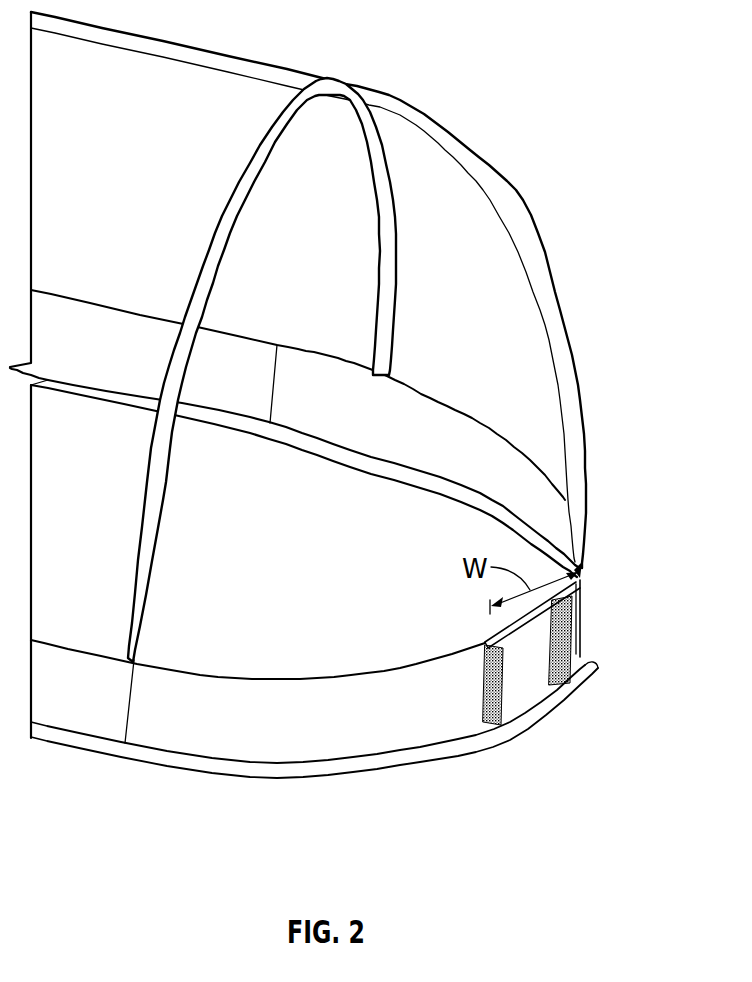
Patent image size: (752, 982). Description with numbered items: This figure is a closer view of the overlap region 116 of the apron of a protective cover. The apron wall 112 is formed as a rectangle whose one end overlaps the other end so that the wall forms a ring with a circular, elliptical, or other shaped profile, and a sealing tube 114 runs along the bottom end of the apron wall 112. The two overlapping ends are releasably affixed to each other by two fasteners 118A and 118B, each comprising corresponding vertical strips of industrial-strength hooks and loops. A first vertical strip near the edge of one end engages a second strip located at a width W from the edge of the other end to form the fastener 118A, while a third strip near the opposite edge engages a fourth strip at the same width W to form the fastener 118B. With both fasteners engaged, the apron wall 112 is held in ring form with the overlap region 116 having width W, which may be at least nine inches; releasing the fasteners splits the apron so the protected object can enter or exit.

The apron wall 112 is at (138, 725).
The sealing tube 114 is at (422, 758).
The overlap region 116 is at (538, 642).
The fastener 118A is at (487, 675).
The fastener 118B is at (570, 657).